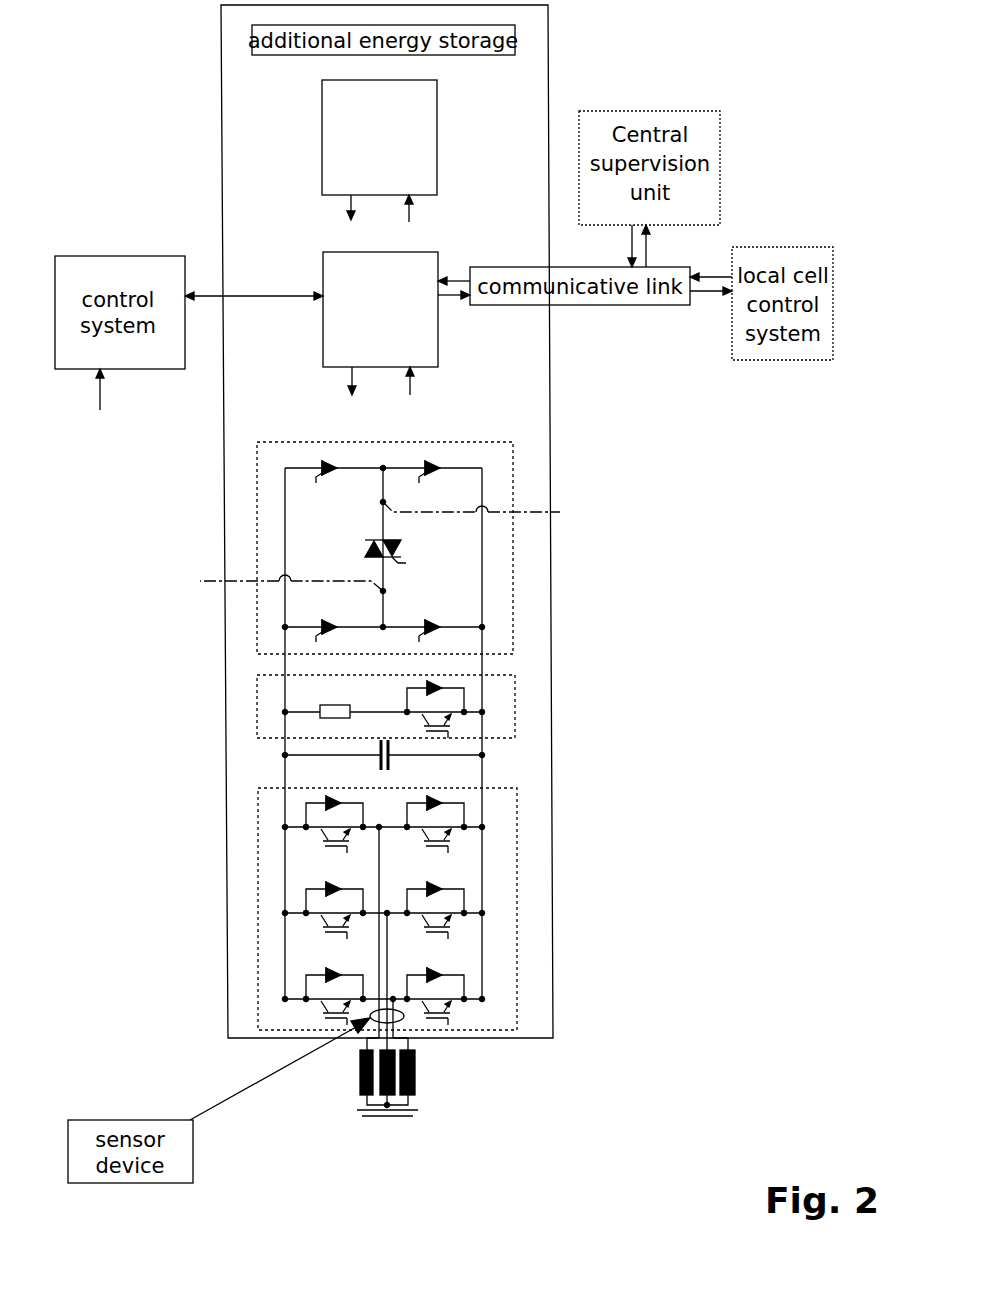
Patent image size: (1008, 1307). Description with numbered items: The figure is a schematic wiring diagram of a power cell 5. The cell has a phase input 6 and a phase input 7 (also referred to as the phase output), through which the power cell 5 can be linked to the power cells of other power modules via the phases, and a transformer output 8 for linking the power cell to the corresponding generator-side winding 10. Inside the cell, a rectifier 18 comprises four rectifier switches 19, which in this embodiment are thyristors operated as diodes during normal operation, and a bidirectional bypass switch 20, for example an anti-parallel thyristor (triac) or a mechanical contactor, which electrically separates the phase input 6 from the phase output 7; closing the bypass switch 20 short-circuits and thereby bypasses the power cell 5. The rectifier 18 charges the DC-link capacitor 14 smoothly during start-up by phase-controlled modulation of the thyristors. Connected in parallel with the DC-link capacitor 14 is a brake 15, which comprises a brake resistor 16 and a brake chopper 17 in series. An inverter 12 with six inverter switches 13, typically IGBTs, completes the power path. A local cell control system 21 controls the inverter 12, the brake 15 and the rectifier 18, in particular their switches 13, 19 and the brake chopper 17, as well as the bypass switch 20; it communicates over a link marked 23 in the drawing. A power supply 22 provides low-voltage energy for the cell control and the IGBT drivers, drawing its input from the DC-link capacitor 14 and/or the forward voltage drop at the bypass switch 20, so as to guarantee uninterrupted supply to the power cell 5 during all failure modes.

The power cell 5 is at (227, 872).
The phase input 6 is at (203, 580).
The phase input 7 is at (560, 513).
The transformer output 8 is at (400, 1025).
The generator-side winding 10 is at (357, 1078).
The inverter 12 is at (402, 913).
The inverter switches 13 is at (307, 980).
The DC-link capacitor 14 is at (388, 768).
The brake 15 is at (392, 678).
The brake resistor 16 is at (327, 707).
The brake chopper 17 is at (458, 683).
The rectifier 18 is at (513, 587).
The rectifier switches 19 is at (328, 463).
The bidirectional bypass switch 20 is at (372, 538).
The local cell control system 21 is at (438, 345).
The power supply 22 is at (437, 107).
The control line 23 is at (410, 390).